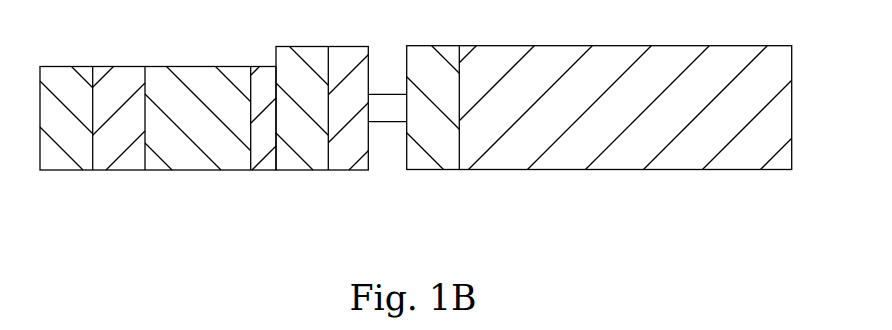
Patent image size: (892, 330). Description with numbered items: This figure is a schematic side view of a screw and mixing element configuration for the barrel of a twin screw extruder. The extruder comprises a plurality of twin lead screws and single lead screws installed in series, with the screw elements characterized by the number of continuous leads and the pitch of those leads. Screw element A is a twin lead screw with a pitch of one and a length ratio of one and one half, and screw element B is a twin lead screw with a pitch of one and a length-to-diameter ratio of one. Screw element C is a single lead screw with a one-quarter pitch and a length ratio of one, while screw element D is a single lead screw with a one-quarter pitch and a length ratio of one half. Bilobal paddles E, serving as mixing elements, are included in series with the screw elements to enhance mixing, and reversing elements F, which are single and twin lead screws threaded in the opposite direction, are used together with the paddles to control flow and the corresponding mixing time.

The twin lead screw element A is at (145, 63).
The twin lead screw element B is at (407, 45).
The single lead screw element C is at (93, 63).
The single lead screw element D is at (40, 63).
The bilobal paddles E is at (328, 170).
The reversing elements F is at (252, 63).